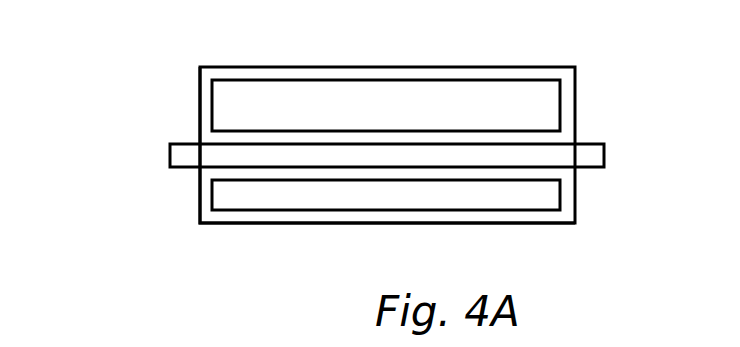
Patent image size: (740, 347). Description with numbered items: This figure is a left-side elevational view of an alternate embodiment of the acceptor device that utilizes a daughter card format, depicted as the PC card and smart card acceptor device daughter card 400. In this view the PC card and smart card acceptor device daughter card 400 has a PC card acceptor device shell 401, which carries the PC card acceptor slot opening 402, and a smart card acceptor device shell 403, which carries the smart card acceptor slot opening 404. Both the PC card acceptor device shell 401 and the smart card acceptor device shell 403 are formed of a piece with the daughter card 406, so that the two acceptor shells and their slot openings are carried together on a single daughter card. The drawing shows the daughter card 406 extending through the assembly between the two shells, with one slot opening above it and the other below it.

The PC card and smart card acceptor device daughter card 400 is at (130, 196).
The PC card acceptor device shell 401 is at (505, 66).
The PC card acceptor slot opening 402 is at (255, 101).
The smart card acceptor device shell 403 is at (199, 208).
The smart card acceptor slot opening 404 is at (260, 200).
The daughter card 406 is at (604, 154).